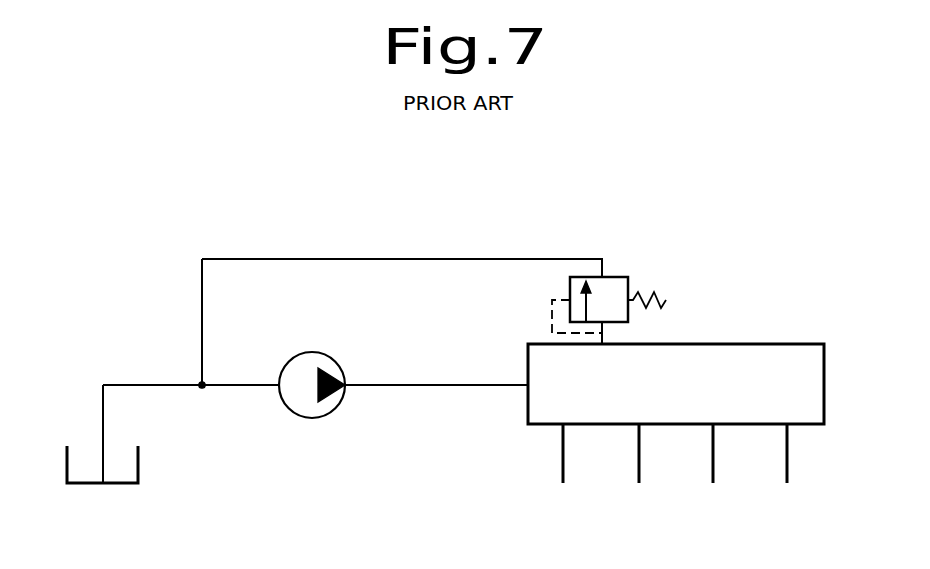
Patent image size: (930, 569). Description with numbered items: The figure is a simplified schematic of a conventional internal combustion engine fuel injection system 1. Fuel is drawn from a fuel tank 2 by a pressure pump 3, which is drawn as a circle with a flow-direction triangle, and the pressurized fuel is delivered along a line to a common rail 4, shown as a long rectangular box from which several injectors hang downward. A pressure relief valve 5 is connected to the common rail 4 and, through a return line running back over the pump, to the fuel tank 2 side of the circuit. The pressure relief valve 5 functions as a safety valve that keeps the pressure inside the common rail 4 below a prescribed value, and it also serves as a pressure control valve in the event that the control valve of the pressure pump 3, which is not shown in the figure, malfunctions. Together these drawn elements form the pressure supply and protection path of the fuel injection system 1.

The fuel injection system 1 is at (672, 219).
The fuel tank 2 is at (105, 486).
The pressure pump 3 is at (313, 418).
The common rail 4 is at (529, 415).
The pressure relief valve 5 is at (630, 285).